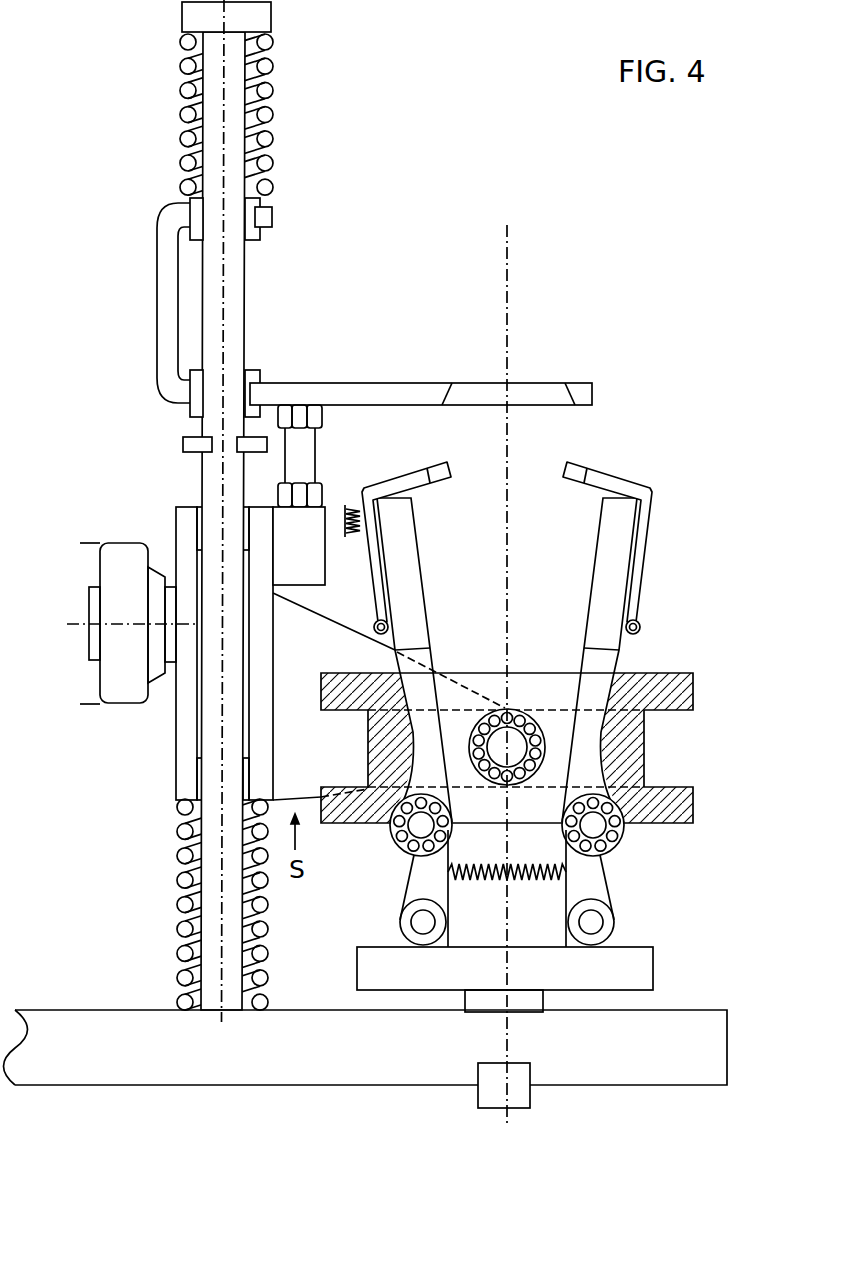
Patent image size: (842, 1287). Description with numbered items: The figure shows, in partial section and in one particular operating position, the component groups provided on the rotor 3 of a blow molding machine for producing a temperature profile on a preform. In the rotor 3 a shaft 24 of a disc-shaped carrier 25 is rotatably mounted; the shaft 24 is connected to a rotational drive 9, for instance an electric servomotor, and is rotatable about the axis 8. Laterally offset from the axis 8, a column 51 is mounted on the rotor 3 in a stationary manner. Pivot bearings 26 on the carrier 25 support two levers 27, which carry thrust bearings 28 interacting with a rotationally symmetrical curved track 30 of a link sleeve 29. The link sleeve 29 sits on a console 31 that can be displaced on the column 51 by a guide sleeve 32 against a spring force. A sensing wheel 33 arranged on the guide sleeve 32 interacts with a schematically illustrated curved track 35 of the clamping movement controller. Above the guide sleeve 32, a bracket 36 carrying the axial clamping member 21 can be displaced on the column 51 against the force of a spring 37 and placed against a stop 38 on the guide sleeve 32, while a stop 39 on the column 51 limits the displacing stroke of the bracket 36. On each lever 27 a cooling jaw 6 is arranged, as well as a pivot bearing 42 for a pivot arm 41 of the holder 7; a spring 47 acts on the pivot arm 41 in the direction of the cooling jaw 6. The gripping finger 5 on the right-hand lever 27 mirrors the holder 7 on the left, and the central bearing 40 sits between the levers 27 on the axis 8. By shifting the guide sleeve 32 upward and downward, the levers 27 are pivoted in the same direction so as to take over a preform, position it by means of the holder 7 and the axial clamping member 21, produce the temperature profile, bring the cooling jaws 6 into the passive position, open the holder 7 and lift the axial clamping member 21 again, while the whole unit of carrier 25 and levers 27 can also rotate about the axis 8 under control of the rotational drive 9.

The rotor 3 is at (727, 1025).
The right gripping hook 5 is at (638, 468).
The cooling jaw 6 is at (418, 582).
The holder 7 is at (403, 474).
The axis 8 is at (508, 1032).
The rotational drive 9 is at (487, 1070).
The axial clamping member 21 is at (428, 392).
The shaft 24 is at (542, 996).
The carrier 25 is at (653, 957).
The pivot bearing 26 is at (600, 908).
The lever 27 is at (588, 870).
The thrust bearing 28 is at (623, 838).
The link sleeve 29 is at (640, 757).
The curved track 30 is at (693, 717).
The console 31 is at (316, 627).
The guide sleeve 32 is at (182, 693).
The sensing wheel 33 is at (117, 700).
The curved track 35 is at (95, 542).
The bracket 36 is at (158, 292).
The spring 37 is at (238, 78).
The stop 38 is at (315, 445).
The stop 39 is at (183, 445).
The central bearing 40 is at (517, 708).
The pivot arm 41 is at (367, 567).
The pivot bearing 42 is at (392, 628).
The spring 47 is at (351, 510).
The column 51 is at (266, 112).